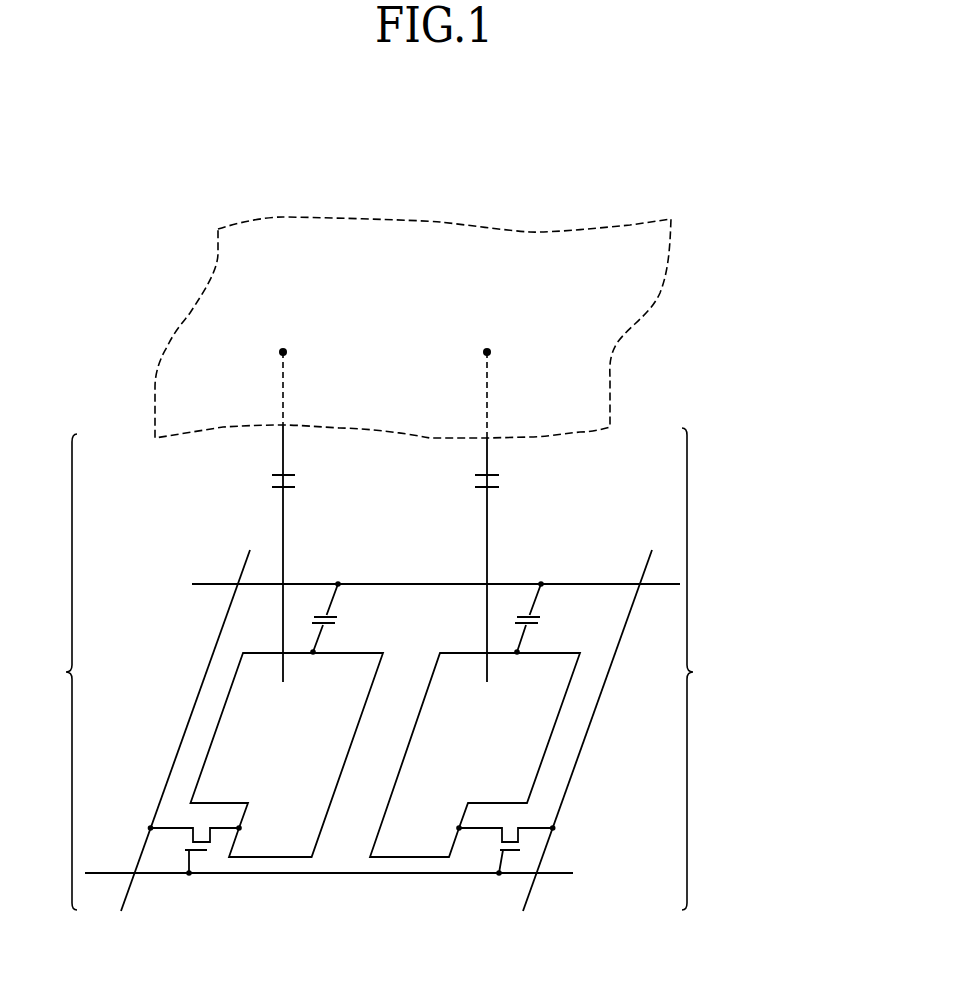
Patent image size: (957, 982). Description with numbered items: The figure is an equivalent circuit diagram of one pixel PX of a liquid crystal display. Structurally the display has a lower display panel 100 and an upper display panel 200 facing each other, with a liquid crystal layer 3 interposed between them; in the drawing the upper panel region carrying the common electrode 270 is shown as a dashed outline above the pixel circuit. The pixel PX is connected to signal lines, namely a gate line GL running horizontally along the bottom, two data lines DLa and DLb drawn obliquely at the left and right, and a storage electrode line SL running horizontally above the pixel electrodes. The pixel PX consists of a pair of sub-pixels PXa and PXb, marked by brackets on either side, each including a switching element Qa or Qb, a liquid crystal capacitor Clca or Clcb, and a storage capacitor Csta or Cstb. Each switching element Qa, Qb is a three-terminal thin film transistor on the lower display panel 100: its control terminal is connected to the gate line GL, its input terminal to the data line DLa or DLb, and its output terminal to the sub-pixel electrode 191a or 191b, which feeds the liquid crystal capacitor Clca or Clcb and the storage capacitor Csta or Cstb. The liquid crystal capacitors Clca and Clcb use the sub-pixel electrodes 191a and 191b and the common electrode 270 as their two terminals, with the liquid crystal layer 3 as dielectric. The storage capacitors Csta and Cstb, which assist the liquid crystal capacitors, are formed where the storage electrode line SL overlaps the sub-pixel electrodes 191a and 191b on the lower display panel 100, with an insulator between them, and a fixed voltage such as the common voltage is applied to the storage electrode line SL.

The liquid crystal layer 3 is at (758, 454).
The lower display panel 100 is at (771, 705).
The upper display panel 200 is at (739, 301).
The common electrode 270 is at (662, 278).
The sub-pixel electrode 191a is at (273, 857).
The sub-pixel electrode 191b is at (560, 722).
The pixel PX is at (401, 905).
The sub-pixel PXa is at (44, 672).
The sub-pixel PXb is at (716, 669).
The gate line GL is at (351, 871).
The storage electrode line SL is at (417, 583).
The data line DLa is at (195, 715).
The data line DLb is at (598, 715).
The switching element Qa is at (195, 850).
The switching element Qb is at (505, 850).
The liquid crystal capacitor Clca is at (311, 515).
The liquid crystal capacitor Clcb is at (514, 515).
The storage capacitor Csta is at (352, 618).
The storage capacitor Cstb is at (556, 618).